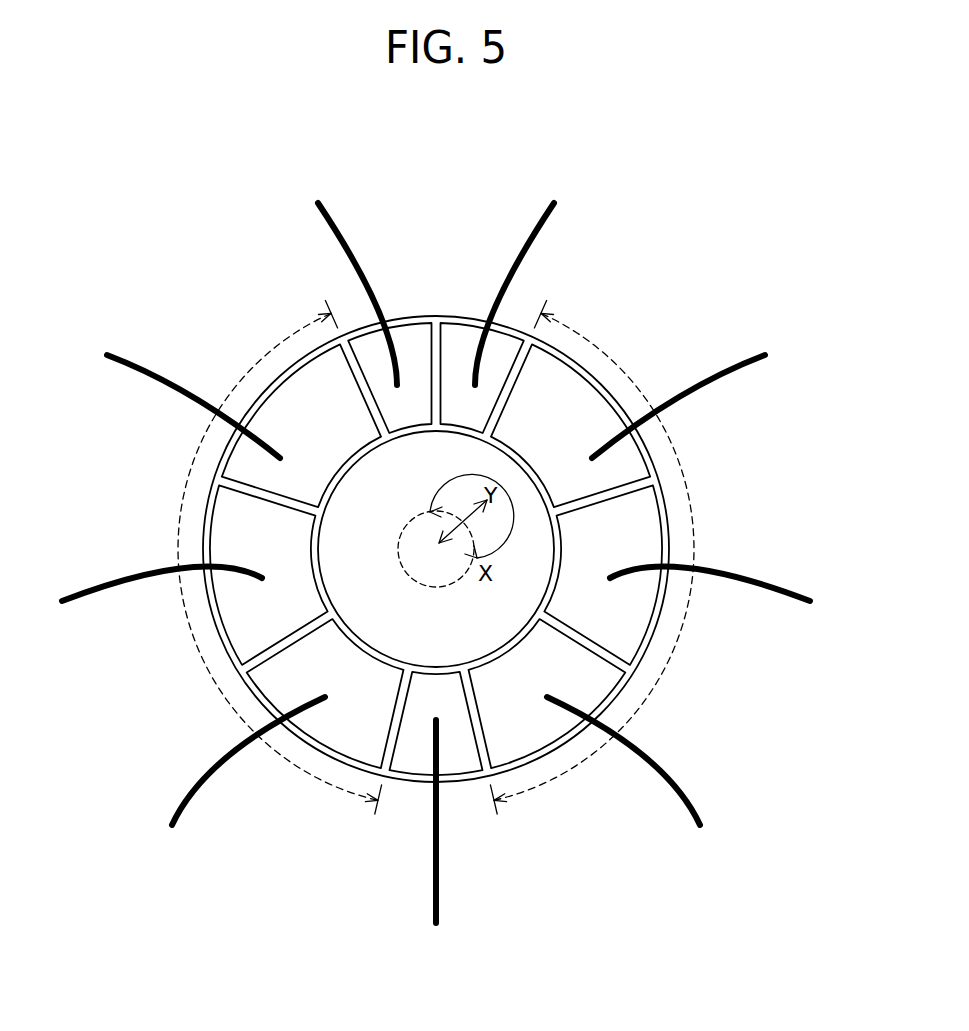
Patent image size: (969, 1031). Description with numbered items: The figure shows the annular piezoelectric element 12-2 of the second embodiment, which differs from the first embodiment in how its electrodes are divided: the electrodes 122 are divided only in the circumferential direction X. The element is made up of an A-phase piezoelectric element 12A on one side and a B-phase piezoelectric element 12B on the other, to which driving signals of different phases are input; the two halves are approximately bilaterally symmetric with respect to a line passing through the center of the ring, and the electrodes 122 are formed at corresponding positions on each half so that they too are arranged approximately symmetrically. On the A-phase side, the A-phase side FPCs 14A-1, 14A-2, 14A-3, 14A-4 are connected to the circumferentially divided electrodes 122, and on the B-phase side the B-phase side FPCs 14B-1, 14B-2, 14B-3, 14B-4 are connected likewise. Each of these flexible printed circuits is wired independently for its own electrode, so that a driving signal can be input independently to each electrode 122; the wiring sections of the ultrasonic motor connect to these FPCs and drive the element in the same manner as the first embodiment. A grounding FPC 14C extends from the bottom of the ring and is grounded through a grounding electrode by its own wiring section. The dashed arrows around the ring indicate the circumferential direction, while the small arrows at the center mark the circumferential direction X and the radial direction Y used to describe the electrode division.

The piezoelectric element 12-2 is at (684, 200).
The electrodes 122 is at (400, 335).
The A-phase piezoelectric element 12A is at (185, 487).
The B-phase piezoelectric element 12B is at (688, 488).
The A-phase side FPC 14A-1 is at (335, 228).
The A-phase side FPC 14A-2 is at (180, 384).
The A-phase side FPC 14A-3 is at (90, 597).
The A-phase side FPC 14A-4 is at (180, 806).
The B-phase side FPC 14B-1 is at (537, 223).
The B-phase side FPC 14B-2 is at (692, 381).
The B-phase side FPC 14B-3 is at (782, 599).
The B-phase side FPC 14B-4 is at (692, 806).
The grounding FPC 14C is at (440, 898).